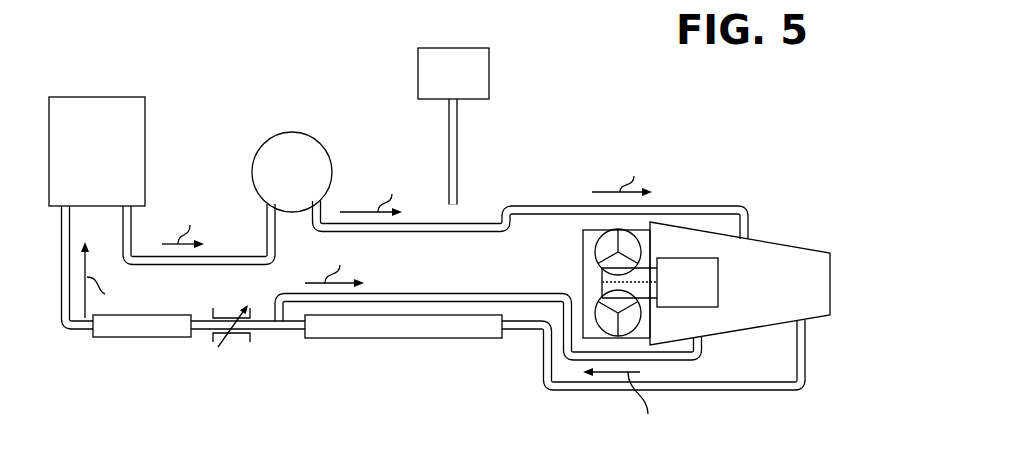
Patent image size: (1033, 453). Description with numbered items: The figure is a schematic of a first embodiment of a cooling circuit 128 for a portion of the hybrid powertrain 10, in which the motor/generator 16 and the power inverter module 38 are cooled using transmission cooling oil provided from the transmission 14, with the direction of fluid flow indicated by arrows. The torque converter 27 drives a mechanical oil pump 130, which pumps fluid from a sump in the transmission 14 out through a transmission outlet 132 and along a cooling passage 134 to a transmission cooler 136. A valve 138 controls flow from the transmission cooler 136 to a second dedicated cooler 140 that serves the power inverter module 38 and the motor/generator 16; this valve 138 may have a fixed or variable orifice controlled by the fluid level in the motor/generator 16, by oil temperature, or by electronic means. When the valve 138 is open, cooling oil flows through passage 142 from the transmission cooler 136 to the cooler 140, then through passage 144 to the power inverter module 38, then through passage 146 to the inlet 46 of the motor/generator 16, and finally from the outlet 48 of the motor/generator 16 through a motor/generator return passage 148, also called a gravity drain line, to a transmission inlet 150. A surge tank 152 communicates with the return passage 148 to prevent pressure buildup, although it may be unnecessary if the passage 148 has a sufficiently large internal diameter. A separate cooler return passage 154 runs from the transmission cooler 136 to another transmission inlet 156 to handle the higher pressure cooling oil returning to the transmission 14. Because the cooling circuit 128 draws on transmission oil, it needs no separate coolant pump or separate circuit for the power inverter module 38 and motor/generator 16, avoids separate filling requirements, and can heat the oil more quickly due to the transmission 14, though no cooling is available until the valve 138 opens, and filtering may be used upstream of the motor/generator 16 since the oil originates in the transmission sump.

The hybrid powertrain 10 is at (512, 71).
The transmission 14 is at (769, 292).
The motor/generator 16 is at (281, 183).
The torque converter 27 is at (573, 252).
The power inverter module 38 is at (88, 160).
The inlet 46 is at (266, 212).
The outlet 48 is at (320, 210).
The cooling circuit 128 is at (304, 150).
The mechanical oil pump 130 is at (672, 292).
The transmission outlet 132 is at (804, 327).
The cooling passage 134 is at (612, 392).
The transmission cooler 136 is at (405, 338).
The valve 138 is at (240, 347).
The second dedicated cooler 140 is at (142, 337).
The passage 142 is at (216, 330).
The passage 144 is at (63, 248).
The passage 146 is at (250, 257).
The motor/generator return passage 148 is at (538, 205).
The transmission inlet 150 is at (750, 228).
The surge tank 152 is at (437, 84).
The cooler return passage 154 is at (405, 293).
The transmission inlet 156 is at (705, 340).